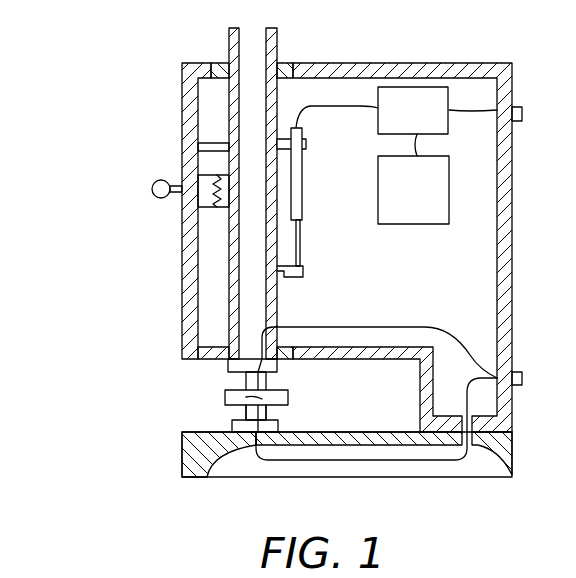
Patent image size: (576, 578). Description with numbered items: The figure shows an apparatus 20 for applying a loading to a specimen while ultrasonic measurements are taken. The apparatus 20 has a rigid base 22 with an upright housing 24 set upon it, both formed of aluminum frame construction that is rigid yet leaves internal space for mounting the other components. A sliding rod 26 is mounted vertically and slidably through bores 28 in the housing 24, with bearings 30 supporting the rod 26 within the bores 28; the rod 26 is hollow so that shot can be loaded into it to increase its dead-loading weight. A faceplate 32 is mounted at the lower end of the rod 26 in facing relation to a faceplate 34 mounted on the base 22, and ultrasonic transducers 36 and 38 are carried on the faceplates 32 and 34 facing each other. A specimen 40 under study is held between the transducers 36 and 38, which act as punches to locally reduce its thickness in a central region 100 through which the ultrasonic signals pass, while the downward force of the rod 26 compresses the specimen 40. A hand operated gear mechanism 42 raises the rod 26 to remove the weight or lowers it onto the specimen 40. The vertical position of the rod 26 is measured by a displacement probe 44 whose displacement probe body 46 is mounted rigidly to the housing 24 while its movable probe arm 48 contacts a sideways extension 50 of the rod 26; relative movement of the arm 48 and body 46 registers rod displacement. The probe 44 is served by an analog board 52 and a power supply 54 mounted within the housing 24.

The apparatus 20 is at (166, 53).
The rigid base 22 is at (513, 452).
The upright housing 24 is at (513, 243).
The sliding rod 26 is at (278, 40).
The bores 28 is at (222, 65).
The bearings 30 is at (287, 362).
The faceplate 32 is at (240, 376).
The faceplate 34 is at (233, 425).
The ultrasonic transducer 36 is at (247, 385).
The ultrasonic transducer 38 is at (278, 414).
The specimen 40 is at (289, 393).
The hand operated gear mechanism 42 is at (208, 176).
The displacement probe 44 is at (318, 216).
The displacement probe body 46 is at (304, 190).
The movable probe arm 48 is at (304, 237).
The sideways extension 50 is at (290, 278).
The analog board 52 is at (430, 87).
The power supply 54 is at (415, 224).
The central region 100 is at (262, 399).